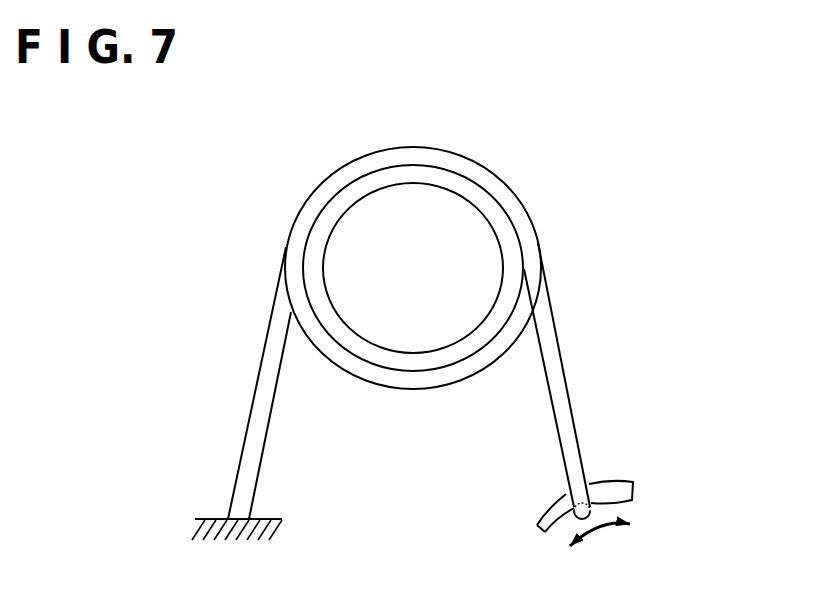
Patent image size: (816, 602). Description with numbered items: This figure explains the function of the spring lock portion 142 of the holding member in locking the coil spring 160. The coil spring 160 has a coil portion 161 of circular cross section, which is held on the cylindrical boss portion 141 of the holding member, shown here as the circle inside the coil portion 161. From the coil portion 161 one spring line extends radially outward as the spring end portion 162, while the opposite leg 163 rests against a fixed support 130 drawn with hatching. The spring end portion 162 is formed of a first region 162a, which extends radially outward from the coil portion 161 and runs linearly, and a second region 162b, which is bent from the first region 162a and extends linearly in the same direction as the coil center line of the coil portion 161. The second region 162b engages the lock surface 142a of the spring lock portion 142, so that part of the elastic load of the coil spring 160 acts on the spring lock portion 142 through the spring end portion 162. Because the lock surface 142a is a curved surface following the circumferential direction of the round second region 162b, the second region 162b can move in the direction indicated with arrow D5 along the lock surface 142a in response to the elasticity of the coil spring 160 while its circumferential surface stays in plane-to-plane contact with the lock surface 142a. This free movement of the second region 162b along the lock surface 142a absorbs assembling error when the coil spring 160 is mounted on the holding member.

The frame / fixed base 130 is at (214, 518).
The boss portion 141 is at (472, 212).
The coil spring 160 is at (436, 306).
The coil portion 161 is at (301, 217).
The spring end portion 162 is at (607, 381).
The first region 162a is at (566, 405).
The second region 162b is at (593, 512).
The first arm 163 is at (258, 397).
The spring lock portion 142 is at (559, 496).
The lock surface 142a is at (562, 534).
The direction indicated with arrow D5 is at (600, 544).